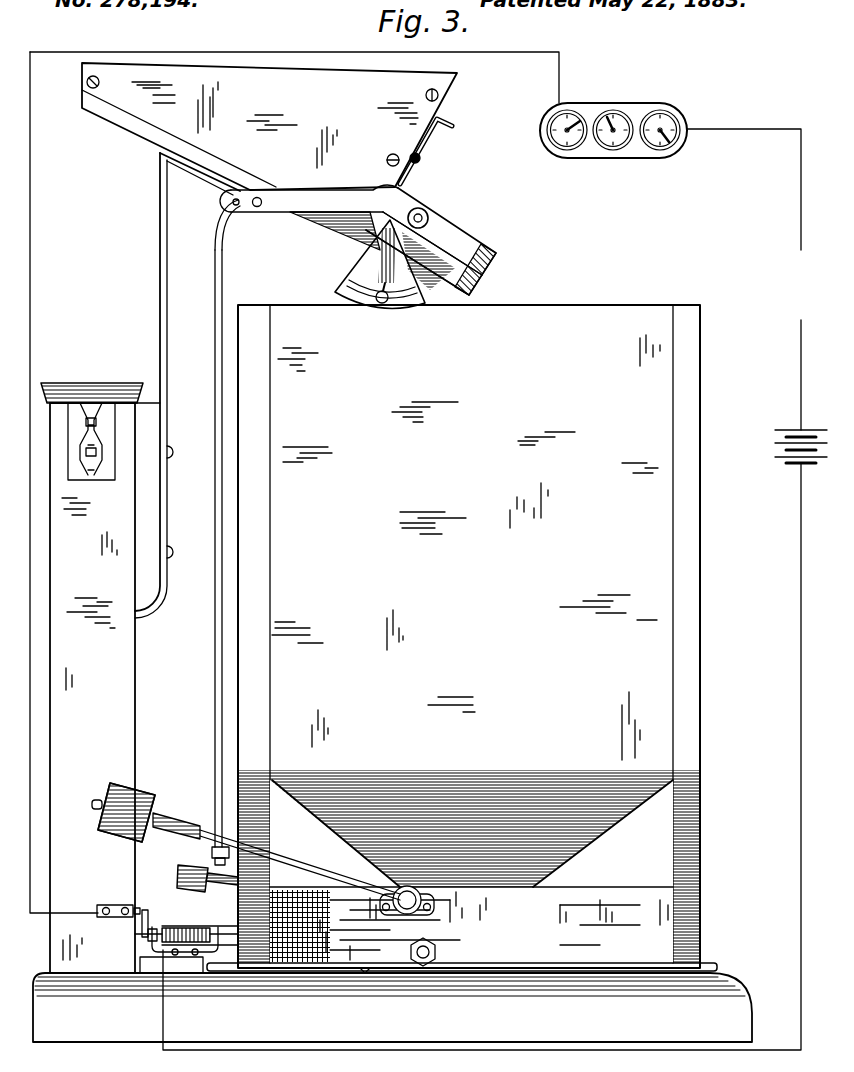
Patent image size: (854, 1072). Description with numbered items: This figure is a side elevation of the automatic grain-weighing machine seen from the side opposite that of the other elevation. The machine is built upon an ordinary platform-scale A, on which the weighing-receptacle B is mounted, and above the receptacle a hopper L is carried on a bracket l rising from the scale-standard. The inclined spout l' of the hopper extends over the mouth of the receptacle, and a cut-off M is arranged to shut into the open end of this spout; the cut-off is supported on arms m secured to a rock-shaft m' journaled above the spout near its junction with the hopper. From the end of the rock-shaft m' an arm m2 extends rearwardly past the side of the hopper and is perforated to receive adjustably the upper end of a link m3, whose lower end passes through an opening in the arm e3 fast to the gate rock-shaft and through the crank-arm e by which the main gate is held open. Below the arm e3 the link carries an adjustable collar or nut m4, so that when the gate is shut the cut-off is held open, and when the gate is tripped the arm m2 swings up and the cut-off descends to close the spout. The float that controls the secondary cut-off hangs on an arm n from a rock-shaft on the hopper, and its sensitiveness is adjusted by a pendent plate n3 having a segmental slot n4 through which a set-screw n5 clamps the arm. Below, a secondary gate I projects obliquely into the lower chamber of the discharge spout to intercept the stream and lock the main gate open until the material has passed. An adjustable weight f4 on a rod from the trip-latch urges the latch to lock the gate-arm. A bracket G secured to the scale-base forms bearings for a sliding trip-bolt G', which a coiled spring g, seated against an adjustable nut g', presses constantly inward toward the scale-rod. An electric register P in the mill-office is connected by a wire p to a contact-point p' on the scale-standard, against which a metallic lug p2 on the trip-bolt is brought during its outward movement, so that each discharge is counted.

The platform-scale A is at (392, 712).
The weighing-receptacle B is at (462, 638).
The hopper L is at (269, 126).
The bracket l is at (187, 385).
The spout l' is at (424, 253).
The cut-off M is at (404, 241).
The arms m is at (429, 185).
The rock-shaft m' is at (443, 213).
The arm m2 is at (309, 198).
The link m3 is at (212, 799).
The adjustable collar or nut m4 is at (212, 851).
The float arm n is at (387, 255).
The pendent ear or plate n3 is at (360, 259).
The segmental slot n4 is at (347, 287).
The set-screw n5 is at (381, 303).
The register P is at (630, 104).
The wire p is at (415, 539).
The button or contact-point p' is at (150, 903).
The metallic lug p2 is at (139, 909).
The crank-arm e is at (423, 900).
The arm e3 is at (308, 868).
The secondary gate I is at (432, 948).
The adjustable weight f4 is at (197, 878).
The coiled spring g is at (186, 922).
The adjustable nut g' is at (171, 922).
The bracket G is at (188, 950).
The trip-bolt G' is at (200, 925).